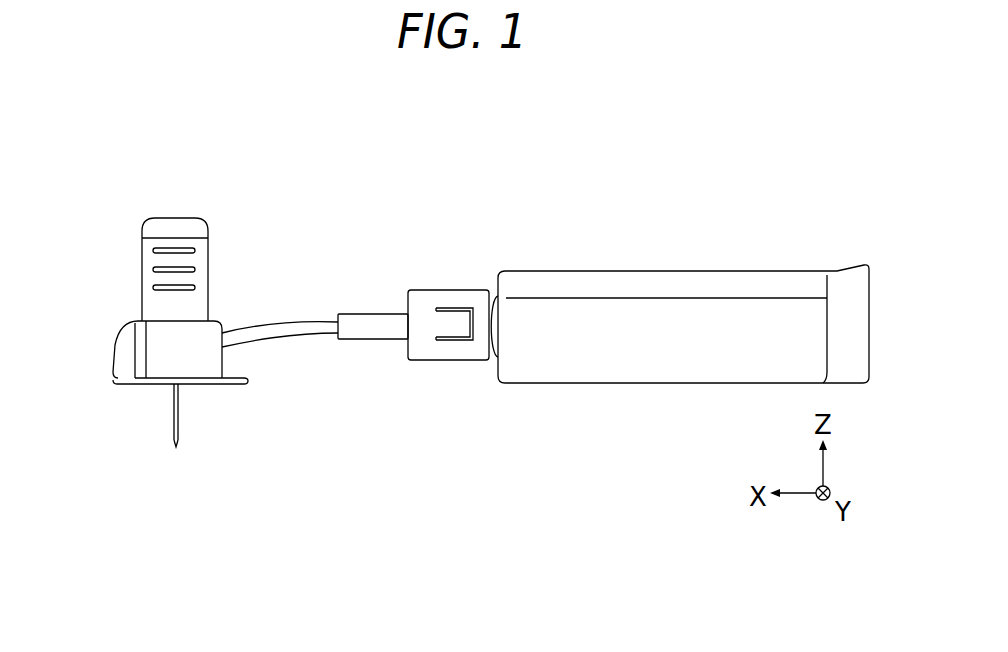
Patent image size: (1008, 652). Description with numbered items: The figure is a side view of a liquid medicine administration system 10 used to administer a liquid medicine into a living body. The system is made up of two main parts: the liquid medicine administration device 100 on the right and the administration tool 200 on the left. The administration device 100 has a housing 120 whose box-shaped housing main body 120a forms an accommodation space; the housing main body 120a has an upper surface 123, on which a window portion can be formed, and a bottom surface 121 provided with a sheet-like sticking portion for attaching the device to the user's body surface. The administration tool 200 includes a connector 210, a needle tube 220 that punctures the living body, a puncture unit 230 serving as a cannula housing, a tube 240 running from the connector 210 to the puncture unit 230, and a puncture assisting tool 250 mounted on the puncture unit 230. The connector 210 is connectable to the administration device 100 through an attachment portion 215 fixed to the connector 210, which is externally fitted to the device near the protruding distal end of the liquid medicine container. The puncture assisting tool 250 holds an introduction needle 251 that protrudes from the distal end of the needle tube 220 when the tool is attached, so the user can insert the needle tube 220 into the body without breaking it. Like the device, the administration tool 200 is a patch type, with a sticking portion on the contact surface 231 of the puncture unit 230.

The liquid medicine administration system 10 is at (117, 149).
The liquid medicine administration device 100 is at (570, 258).
The housing 120 is at (710, 295).
The housing main body 120a is at (585, 353).
The bottom surface 121 is at (681, 385).
The upper surface 123 is at (778, 271).
The administration tool 200 is at (224, 232).
The connector 210 is at (377, 341).
The attachment portion 215 is at (453, 290).
The needle tube 220 is at (180, 415).
The puncture unit 230 is at (152, 358).
The contact surface 231 is at (146, 385).
The tube 240 is at (275, 337).
The puncture assisting tool 250 is at (198, 277).
The introduction needle 251 is at (180, 440).